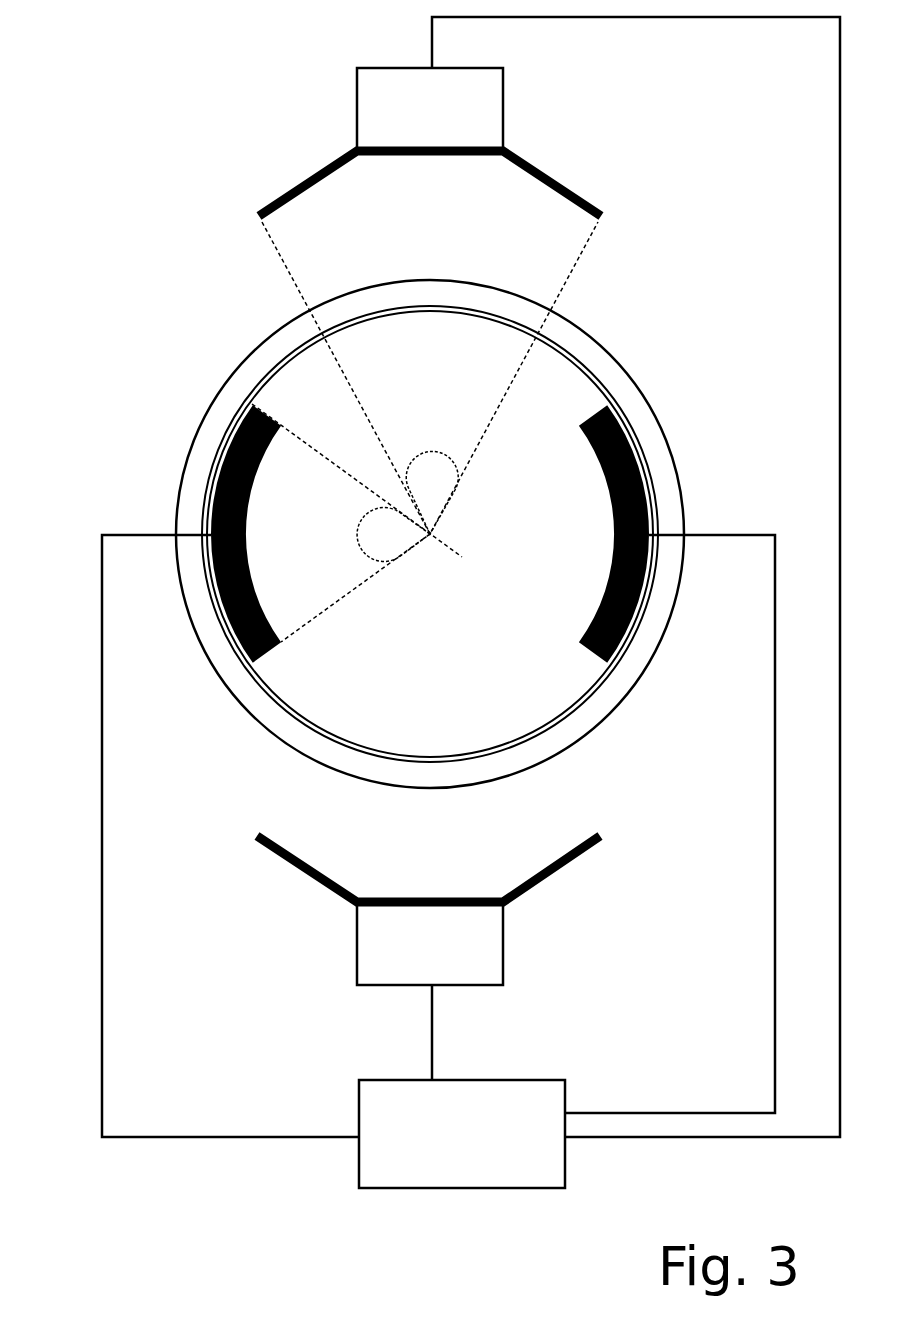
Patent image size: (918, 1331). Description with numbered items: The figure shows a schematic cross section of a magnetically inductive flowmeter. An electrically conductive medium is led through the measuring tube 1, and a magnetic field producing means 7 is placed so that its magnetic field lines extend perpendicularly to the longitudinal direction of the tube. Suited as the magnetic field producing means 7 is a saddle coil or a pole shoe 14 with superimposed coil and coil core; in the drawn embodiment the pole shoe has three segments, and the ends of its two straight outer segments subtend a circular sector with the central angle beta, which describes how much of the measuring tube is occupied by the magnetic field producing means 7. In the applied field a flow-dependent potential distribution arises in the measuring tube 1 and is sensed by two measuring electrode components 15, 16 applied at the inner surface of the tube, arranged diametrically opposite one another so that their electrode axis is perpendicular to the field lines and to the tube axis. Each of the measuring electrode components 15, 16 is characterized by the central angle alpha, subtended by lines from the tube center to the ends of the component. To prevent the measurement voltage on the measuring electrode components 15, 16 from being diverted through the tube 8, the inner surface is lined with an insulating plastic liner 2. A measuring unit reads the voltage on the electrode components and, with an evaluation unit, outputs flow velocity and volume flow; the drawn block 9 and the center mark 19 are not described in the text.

The measuring tube 1 is at (110, 190).
The plastic liner 2 is at (647, 482).
The magnetic field producing means 7 is at (330, 57).
The tube 8 is at (652, 402).
The control unit 9 is at (438, 861).
The pole shoe 14 is at (547, 176).
The measuring electrode component 15 is at (251, 408).
The measuring electrode component 16 is at (633, 613).
The center axis 19 is at (378, 523).